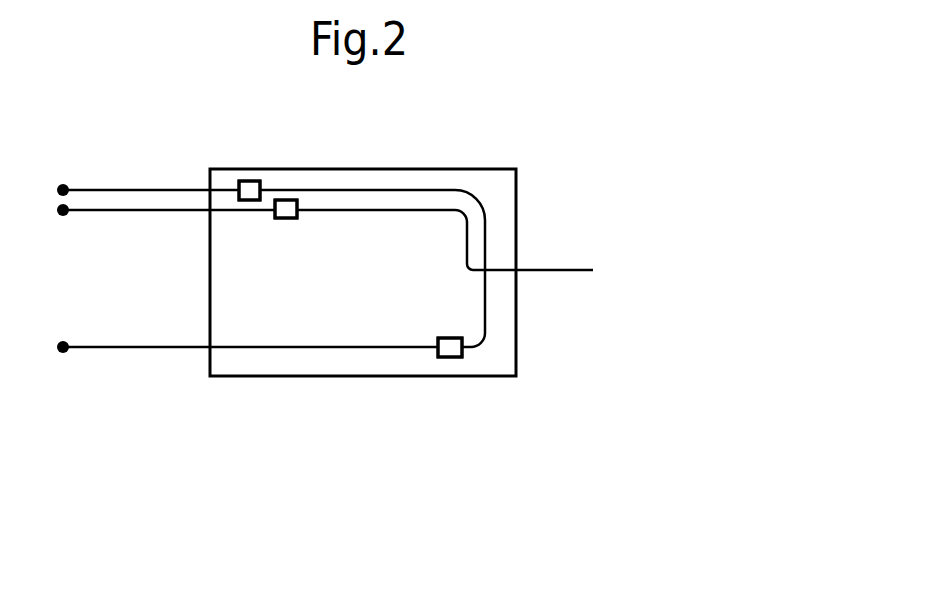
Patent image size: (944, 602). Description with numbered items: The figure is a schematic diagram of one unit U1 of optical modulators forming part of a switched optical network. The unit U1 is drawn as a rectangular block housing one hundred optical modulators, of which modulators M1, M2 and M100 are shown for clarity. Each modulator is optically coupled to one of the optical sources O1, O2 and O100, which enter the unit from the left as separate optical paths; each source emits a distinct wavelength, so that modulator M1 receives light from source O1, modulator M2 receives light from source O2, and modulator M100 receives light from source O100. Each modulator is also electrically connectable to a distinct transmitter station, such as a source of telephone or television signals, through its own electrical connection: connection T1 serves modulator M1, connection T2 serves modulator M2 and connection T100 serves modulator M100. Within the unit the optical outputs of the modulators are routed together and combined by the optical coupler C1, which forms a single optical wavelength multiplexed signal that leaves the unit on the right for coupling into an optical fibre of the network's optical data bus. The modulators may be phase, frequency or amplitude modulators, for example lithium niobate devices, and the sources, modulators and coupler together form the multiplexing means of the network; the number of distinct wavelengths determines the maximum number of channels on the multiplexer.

The unit U1 is at (335, 381).
The optical source O1 is at (67, 182).
The optical source O2 is at (68, 216).
The optical source O100 is at (66, 352).
The optical coupler C1 is at (485, 273).
The optical modulator M1 is at (241, 180).
The electrical connection T1 is at (254, 181).
The optical modulator M2 is at (296, 200).
The electrical connection T2 is at (284, 200).
The optical modulator M100 is at (452, 357).
The electrical connection T100 is at (444, 338).